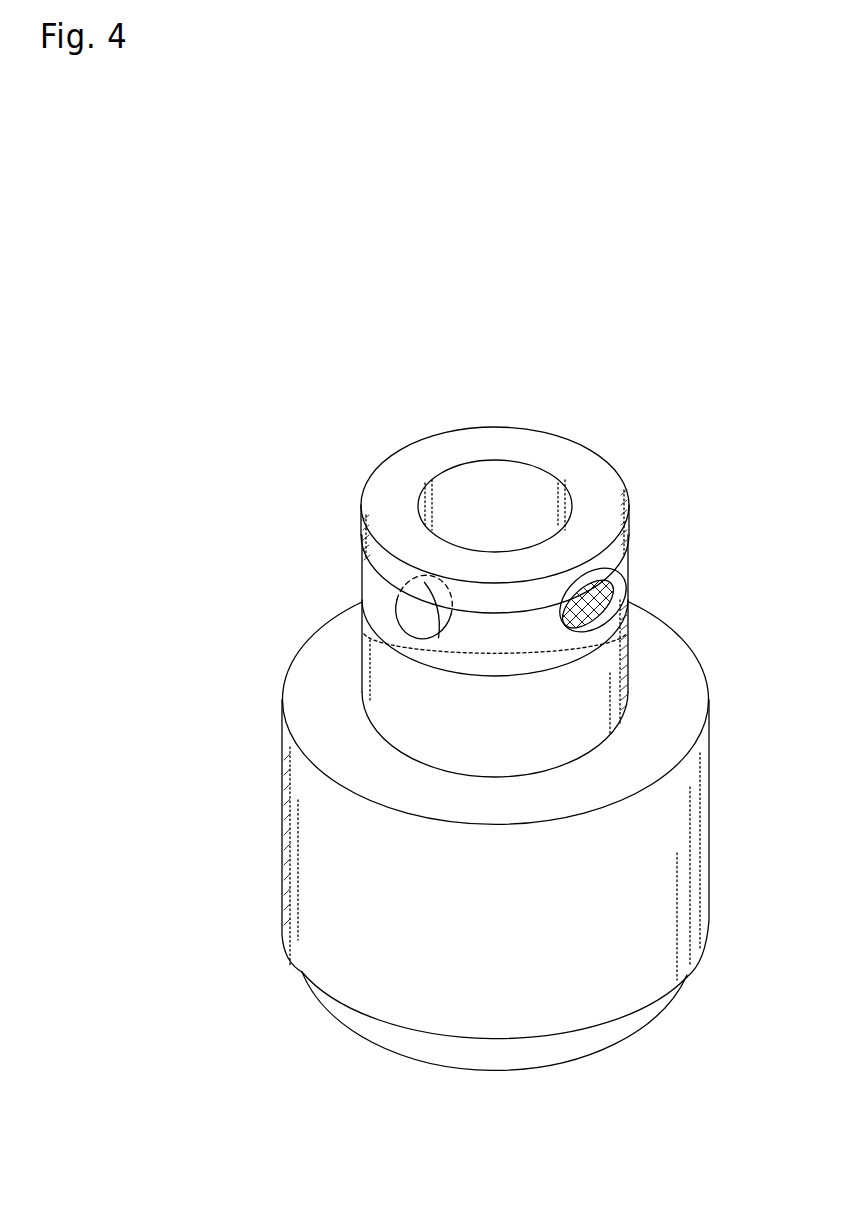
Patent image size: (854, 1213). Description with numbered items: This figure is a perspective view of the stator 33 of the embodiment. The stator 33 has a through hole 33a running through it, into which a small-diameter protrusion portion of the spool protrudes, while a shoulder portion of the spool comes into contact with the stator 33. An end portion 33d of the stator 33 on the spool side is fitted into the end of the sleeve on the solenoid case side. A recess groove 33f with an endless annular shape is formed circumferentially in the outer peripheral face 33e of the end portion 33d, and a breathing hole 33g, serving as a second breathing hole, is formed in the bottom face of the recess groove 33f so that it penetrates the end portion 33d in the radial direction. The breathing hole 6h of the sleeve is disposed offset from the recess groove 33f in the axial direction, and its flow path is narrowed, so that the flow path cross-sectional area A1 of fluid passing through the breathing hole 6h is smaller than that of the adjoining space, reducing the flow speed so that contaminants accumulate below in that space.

The stator 33 is at (498, 703).
The through hole 33a is at (501, 506).
The end portion 33d is at (498, 656).
The outer peripheral face 33e is at (464, 485).
The recess groove 33f is at (484, 632).
The breathing hole 33g is at (413, 628).
The breathing hole 6h is at (655, 602).
The flow path cross-sectional area A1 is at (622, 632).